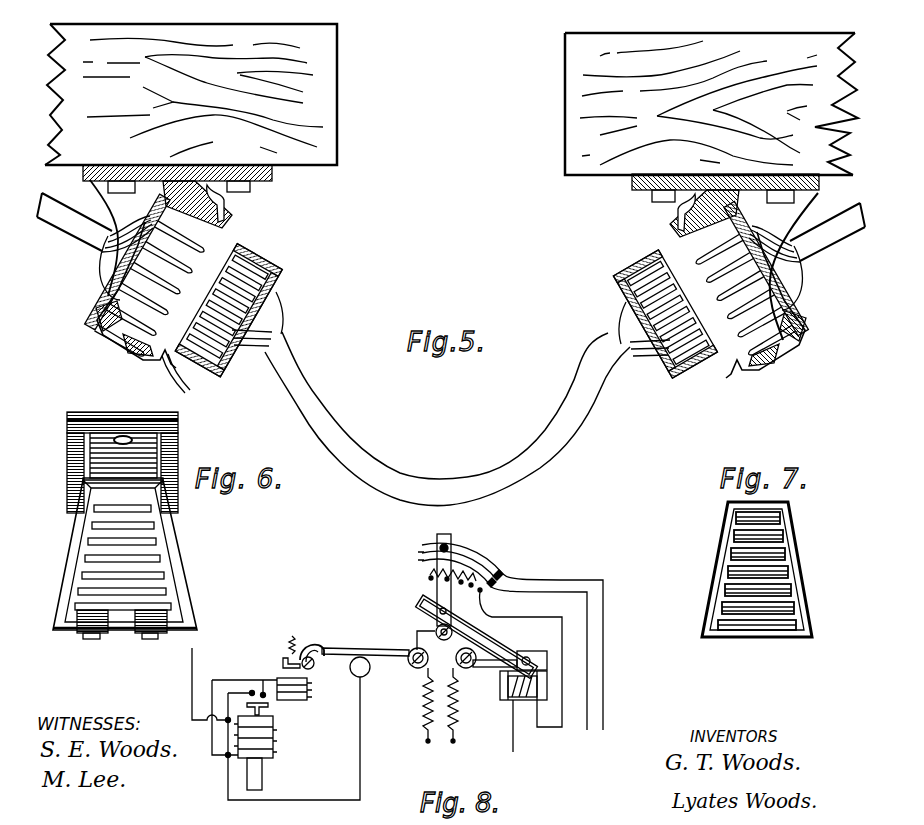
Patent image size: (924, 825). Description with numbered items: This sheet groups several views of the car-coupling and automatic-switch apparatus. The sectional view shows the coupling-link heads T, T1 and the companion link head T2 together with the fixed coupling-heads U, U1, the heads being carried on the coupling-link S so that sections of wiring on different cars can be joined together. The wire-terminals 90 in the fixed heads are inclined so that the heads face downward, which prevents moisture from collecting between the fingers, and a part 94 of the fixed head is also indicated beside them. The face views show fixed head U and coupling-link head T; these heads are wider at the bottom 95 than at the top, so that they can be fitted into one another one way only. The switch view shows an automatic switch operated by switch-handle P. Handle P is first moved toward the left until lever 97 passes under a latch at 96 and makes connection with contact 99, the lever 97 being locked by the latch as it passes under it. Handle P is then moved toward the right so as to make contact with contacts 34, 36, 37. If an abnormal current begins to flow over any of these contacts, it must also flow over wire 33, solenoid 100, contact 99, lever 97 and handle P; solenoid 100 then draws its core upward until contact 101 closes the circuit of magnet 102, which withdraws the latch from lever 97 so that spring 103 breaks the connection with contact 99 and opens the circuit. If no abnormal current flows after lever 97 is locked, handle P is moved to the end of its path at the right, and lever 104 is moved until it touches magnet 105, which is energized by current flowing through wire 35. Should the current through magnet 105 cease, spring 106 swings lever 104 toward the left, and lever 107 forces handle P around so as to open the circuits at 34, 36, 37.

In FIG. 5, the wire-terminals 90 is at (208, 250).
In FIG. 6, the wire-terminals 90 is at (173, 576).
In FIG. 5, the terminal wire 94 is at (172, 380).
In FIG. 6, the terminal wire 94 is at (140, 642).
In FIG. 6, the bottom 95 is at (197, 621).
In FIG. 7, the bottom 95 is at (710, 608).
In FIG. 5, the coupling-link head T is at (279, 264).
In FIG. 7, the coupling-link head T1 is at (747, 569).
In FIG. 5, the plate T two T2 is at (625, 265).
In FIG. 5, the fixed coupling-head U is at (160, 274).
In FIG. 5, the fixed coupling-head U1 is at (796, 320).
In FIG. 5, the connecting strap S is at (447, 418).
In FIG. 8, the switch-handle P is at (421, 576).
In FIG. 8, the wire 33 is at (192, 685).
In FIG. 8, the contact 34 is at (427, 580).
In FIG. 8, the wire 35 is at (565, 743).
In FIG. 8, the contact 36 is at (489, 566).
In FIG. 8, the contact 37 is at (419, 560).
In FIG. 8, the hook 96 is at (312, 645).
In FIG. 8, the lever 97 is at (354, 651).
In FIG. 8, the contact 99 is at (368, 670).
In FIG. 8, the solenoid 100 is at (275, 742).
In FIG. 8, the contact 101 is at (270, 708).
In FIG. 8, the magnet 102 is at (309, 700).
In FIG. 8, the spring 103 is at (425, 712).
In FIG. 8, the lever 104 is at (542, 646).
In FIG. 8, the magnet 105 is at (504, 686).
In FIG. 8, the spring 106 is at (458, 712).
In FIG. 8, the lever 107 is at (425, 602).